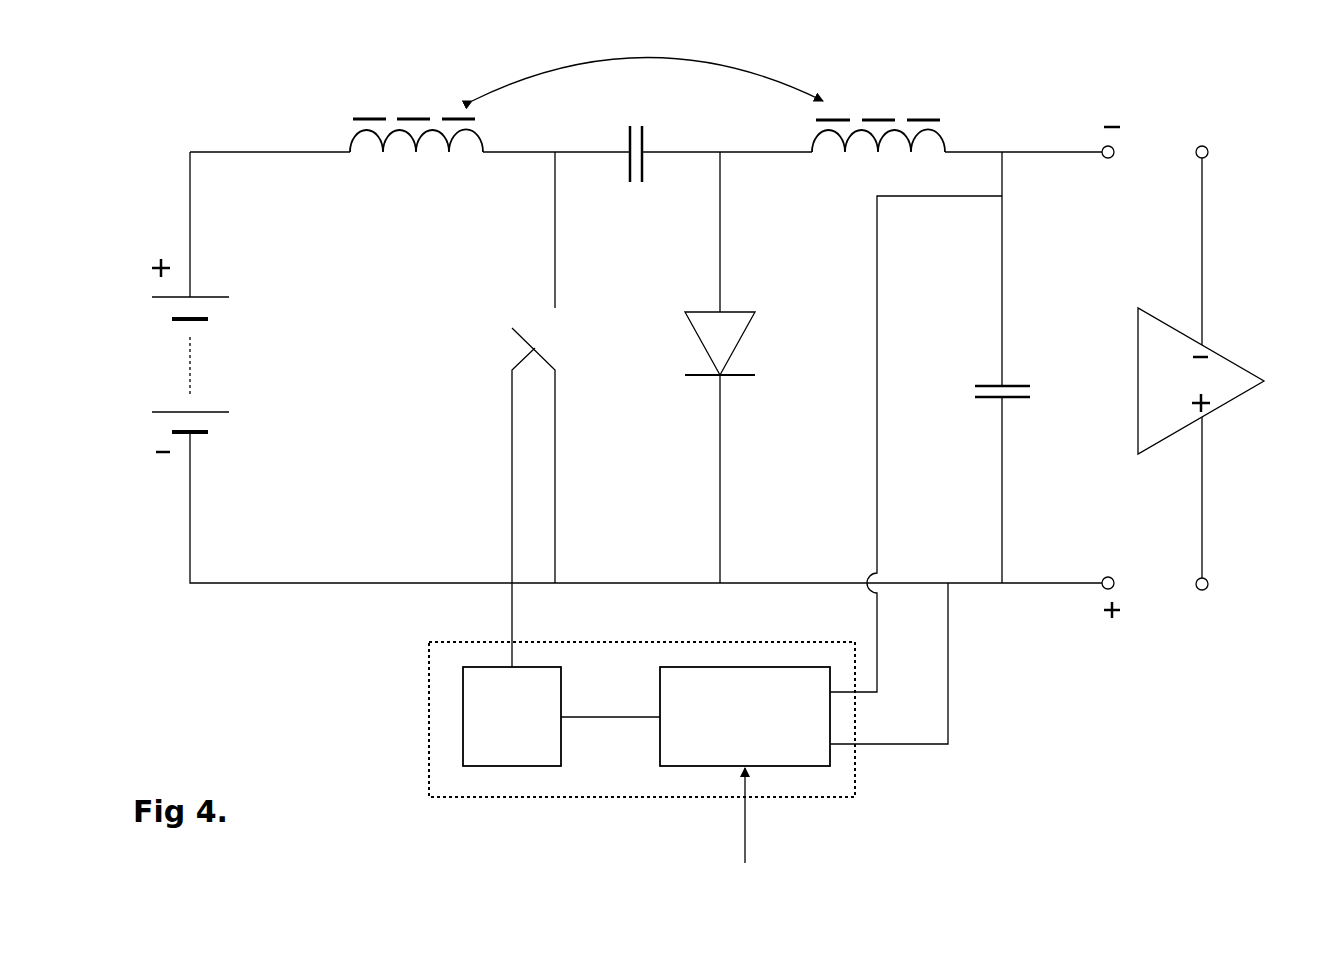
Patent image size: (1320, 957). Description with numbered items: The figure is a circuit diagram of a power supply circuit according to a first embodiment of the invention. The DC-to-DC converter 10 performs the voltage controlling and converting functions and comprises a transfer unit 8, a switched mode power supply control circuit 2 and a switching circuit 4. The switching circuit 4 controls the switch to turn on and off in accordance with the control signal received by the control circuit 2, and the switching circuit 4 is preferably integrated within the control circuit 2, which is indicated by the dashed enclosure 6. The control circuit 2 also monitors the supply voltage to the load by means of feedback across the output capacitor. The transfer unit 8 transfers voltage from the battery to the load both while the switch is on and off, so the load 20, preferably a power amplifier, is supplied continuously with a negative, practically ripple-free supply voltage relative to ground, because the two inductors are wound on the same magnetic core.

The DC-to-DC converter 10 is at (118, 120).
The transfer unit 8 is at (148, 232).
The load 20 is at (1228, 358).
The integrated switching device and control circuit 6 is at (427, 758).
The switching circuit 4 is at (463, 694).
The switched mode power supply control circuit 2 is at (806, 768).